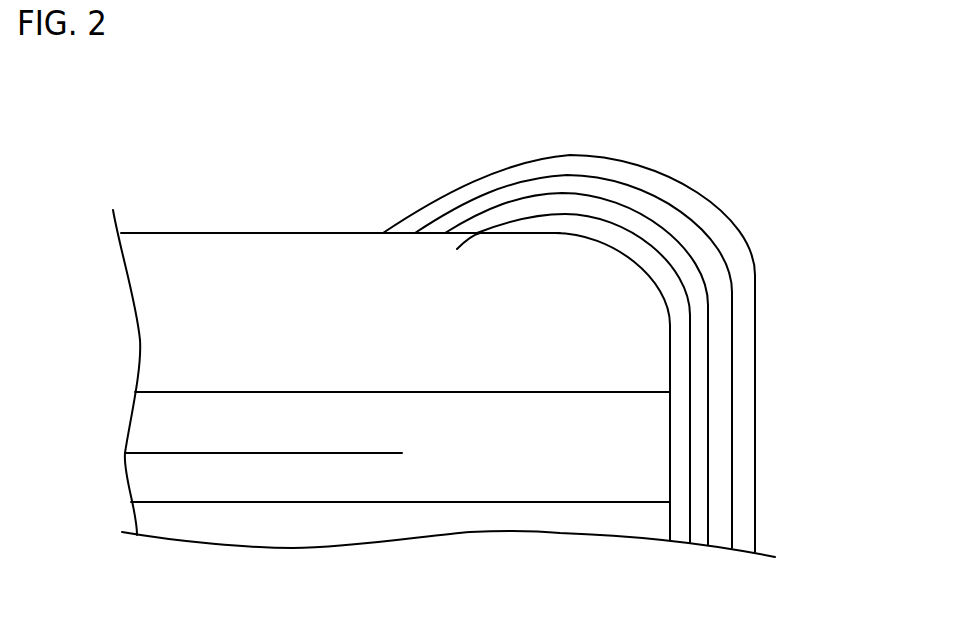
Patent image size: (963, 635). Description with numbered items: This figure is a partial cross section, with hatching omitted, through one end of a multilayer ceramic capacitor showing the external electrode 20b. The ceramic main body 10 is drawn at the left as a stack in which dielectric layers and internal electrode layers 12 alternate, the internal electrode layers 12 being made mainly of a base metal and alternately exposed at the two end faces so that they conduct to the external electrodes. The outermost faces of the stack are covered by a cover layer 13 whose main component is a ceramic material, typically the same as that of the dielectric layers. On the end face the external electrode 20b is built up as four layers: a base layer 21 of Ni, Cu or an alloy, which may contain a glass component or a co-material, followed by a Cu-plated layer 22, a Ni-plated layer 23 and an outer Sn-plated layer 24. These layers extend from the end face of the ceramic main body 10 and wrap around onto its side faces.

The ceramic main body 10 is at (149, 183).
The internal electrode layer 12 is at (227, 455).
The cover layer 13 is at (258, 268).
The external electrode 20b is at (853, 282).
The base layer 21 is at (680, 428).
The Cu-plated layer 22 is at (698, 383).
The Ni-plated layer 23 is at (722, 345).
The Sn-plated layer 24 is at (740, 302).